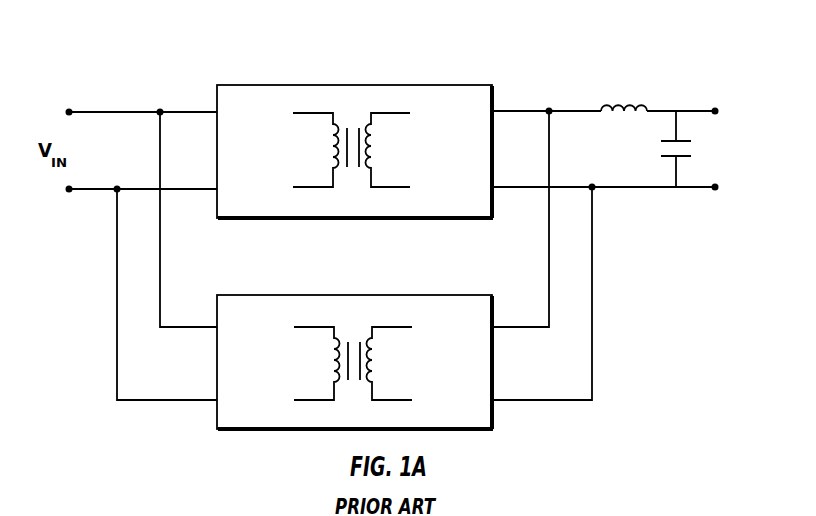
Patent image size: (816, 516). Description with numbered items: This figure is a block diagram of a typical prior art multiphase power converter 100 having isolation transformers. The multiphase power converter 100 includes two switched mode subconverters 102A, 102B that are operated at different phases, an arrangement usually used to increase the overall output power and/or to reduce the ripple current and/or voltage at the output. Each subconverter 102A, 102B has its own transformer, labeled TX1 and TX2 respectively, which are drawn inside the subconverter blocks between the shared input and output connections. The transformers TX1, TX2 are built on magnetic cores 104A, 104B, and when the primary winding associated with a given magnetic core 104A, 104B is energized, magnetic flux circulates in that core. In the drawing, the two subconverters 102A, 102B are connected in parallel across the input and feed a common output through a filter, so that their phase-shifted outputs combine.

The multiphase power converter 100 is at (458, 62).
The subconverter 102A is at (238, 84).
The subconverter 102B is at (240, 430).
The magnetic core 104A is at (348, 108).
The magnetic core 104B is at (348, 316).